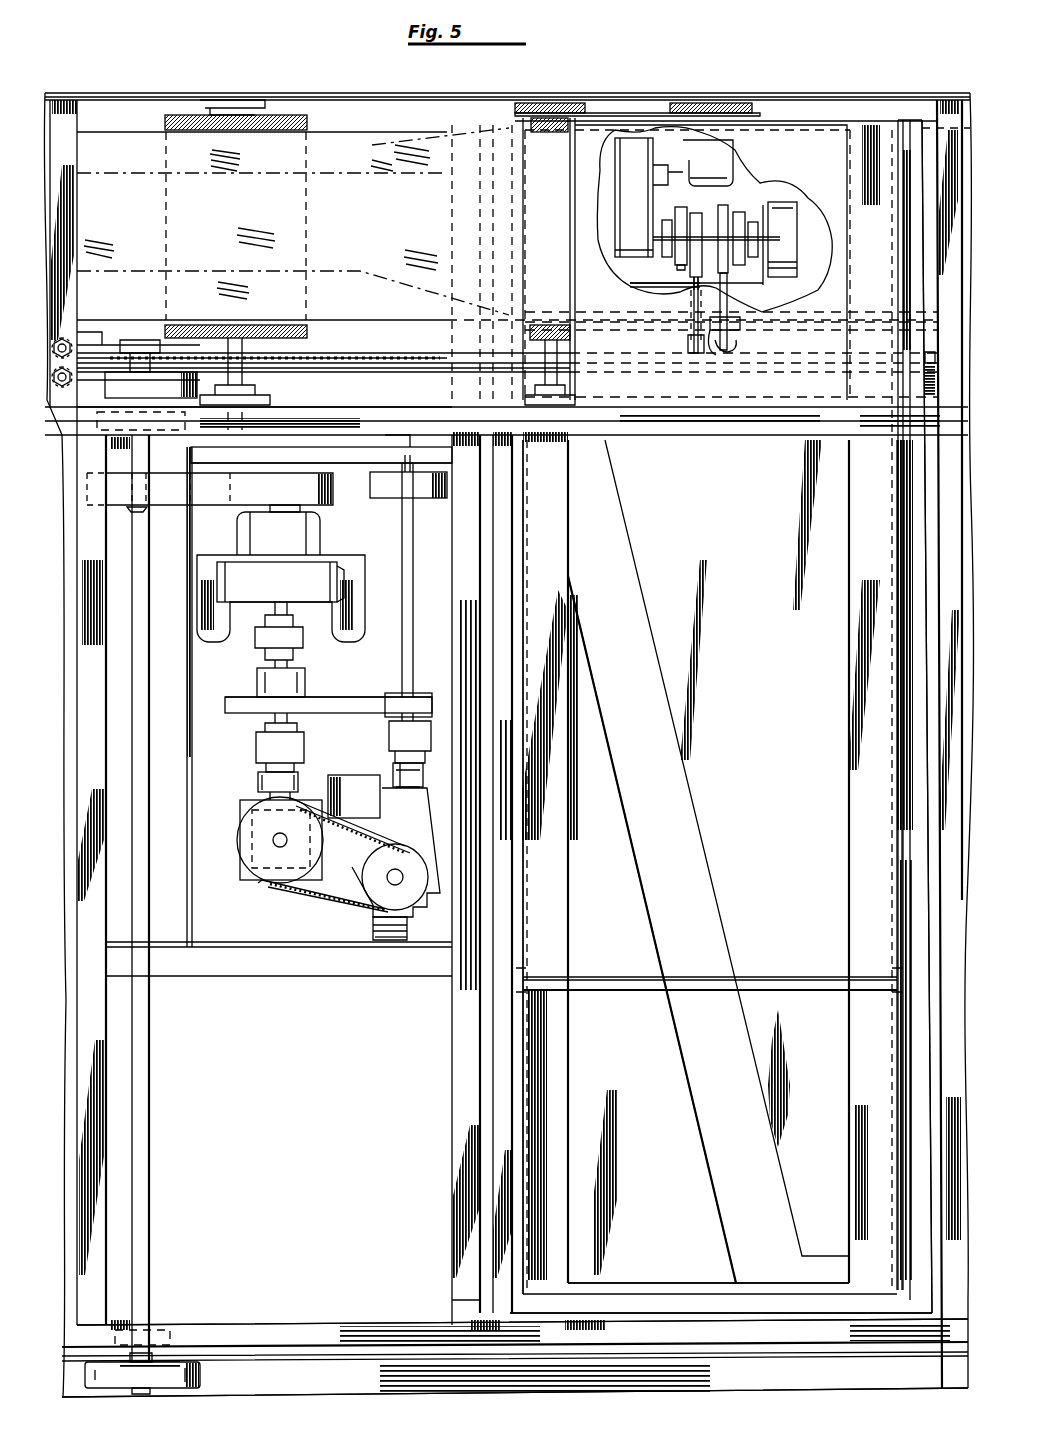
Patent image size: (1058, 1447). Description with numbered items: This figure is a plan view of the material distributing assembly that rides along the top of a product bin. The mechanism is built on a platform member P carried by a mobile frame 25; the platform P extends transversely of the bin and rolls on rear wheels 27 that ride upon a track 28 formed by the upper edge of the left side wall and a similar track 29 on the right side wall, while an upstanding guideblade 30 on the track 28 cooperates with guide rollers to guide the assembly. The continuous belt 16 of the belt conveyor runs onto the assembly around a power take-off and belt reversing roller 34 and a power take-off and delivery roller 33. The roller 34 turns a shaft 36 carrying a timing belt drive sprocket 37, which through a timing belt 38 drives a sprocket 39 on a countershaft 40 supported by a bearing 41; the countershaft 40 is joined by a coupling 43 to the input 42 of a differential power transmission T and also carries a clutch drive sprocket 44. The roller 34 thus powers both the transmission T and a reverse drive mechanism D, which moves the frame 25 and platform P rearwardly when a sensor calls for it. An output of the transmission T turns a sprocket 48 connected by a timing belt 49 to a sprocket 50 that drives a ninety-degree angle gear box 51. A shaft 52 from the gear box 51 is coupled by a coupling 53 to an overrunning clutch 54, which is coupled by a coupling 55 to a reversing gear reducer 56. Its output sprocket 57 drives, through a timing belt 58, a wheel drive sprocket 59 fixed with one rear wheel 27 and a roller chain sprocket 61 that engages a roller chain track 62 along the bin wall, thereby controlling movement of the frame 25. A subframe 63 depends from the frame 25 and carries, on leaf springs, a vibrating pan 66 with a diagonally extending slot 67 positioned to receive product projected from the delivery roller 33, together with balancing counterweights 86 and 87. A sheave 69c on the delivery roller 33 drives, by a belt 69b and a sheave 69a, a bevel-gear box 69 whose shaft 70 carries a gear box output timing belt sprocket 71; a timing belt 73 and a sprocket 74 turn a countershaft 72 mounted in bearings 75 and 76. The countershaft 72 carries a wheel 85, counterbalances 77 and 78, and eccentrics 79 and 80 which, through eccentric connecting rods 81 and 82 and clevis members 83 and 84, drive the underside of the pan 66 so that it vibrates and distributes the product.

The platform member P is at (148, 92).
The continuous belt 16 is at (344, 236).
The mobile frame 25 is at (345, 92).
The rear wheels 27 is at (133, 385).
The track 28 is at (345, 353).
The track 29 is at (305, 1375).
The guideblade 30 is at (378, 363).
The power take-off and delivery roller 33 is at (560, 325).
The power take-off and belt reversing roller 34 is at (268, 112).
The shaft 36 is at (236, 338).
The timing belt drive sprocket 37 is at (273, 448).
The timing belt 38 is at (319, 453).
The sprocket 39 is at (398, 434).
The countershaft 40 is at (414, 458).
The bearing 41 is at (390, 498).
The input 42 is at (425, 775).
The coupling 43 is at (398, 735).
The clutch drive sprocket 44 is at (412, 693).
The sprocket 48 is at (390, 895).
The timing belt 49 is at (325, 895).
The sprocket 50 is at (262, 805).
The angle gear box 51 is at (260, 880).
The shaft 52 is at (292, 782).
The coupling 53 is at (258, 745).
The overrunning clutch 54 is at (250, 700).
The coupling 55 is at (300, 645).
The reversing gear reducer 56 is at (297, 594).
The gear reducer output sprocket 57 is at (318, 520).
The timing belt 58 is at (228, 500).
The wheel drive sprocket 59 is at (128, 505).
The roller chain sprocket 61 is at (128, 345).
The roller chain track 62 is at (318, 355).
The subframe 63 is at (505, 592).
The vibrating pan 66 is at (765, 841).
The diagonally extending slot 67 is at (722, 915).
The bevel-gear box 69 is at (710, 160).
The sheave 69a is at (726, 103).
The belt 69b is at (632, 108).
The sheave 69c is at (548, 103).
The shaft 70 is at (695, 148).
The gear box output timing belt sprocket 71 is at (616, 175).
The countershaft 72 is at (660, 250).
The timing belt 73 is at (665, 230).
The sprocket 74 is at (676, 240).
The bearing 75 is at (680, 268).
The bearing 76 is at (762, 238).
The counterbalance 77 is at (692, 228).
The counterbalance 78 is at (740, 222).
The eccentric 79 is at (722, 210).
The eccentric 80 is at (752, 225).
The eccentric connecting rod 81 is at (690, 284).
The eccentric connecting rod 82 is at (728, 292).
The clevis member 83 is at (692, 345).
The clevis member 84 is at (728, 352).
The wheel 85 is at (785, 225).
The balancing counterweight 86 is at (903, 1053).
The balancing counterweight 87 is at (520, 1055).
The reverse drive mechanism D is at (258, 888).
The differential power transmission T is at (412, 940).